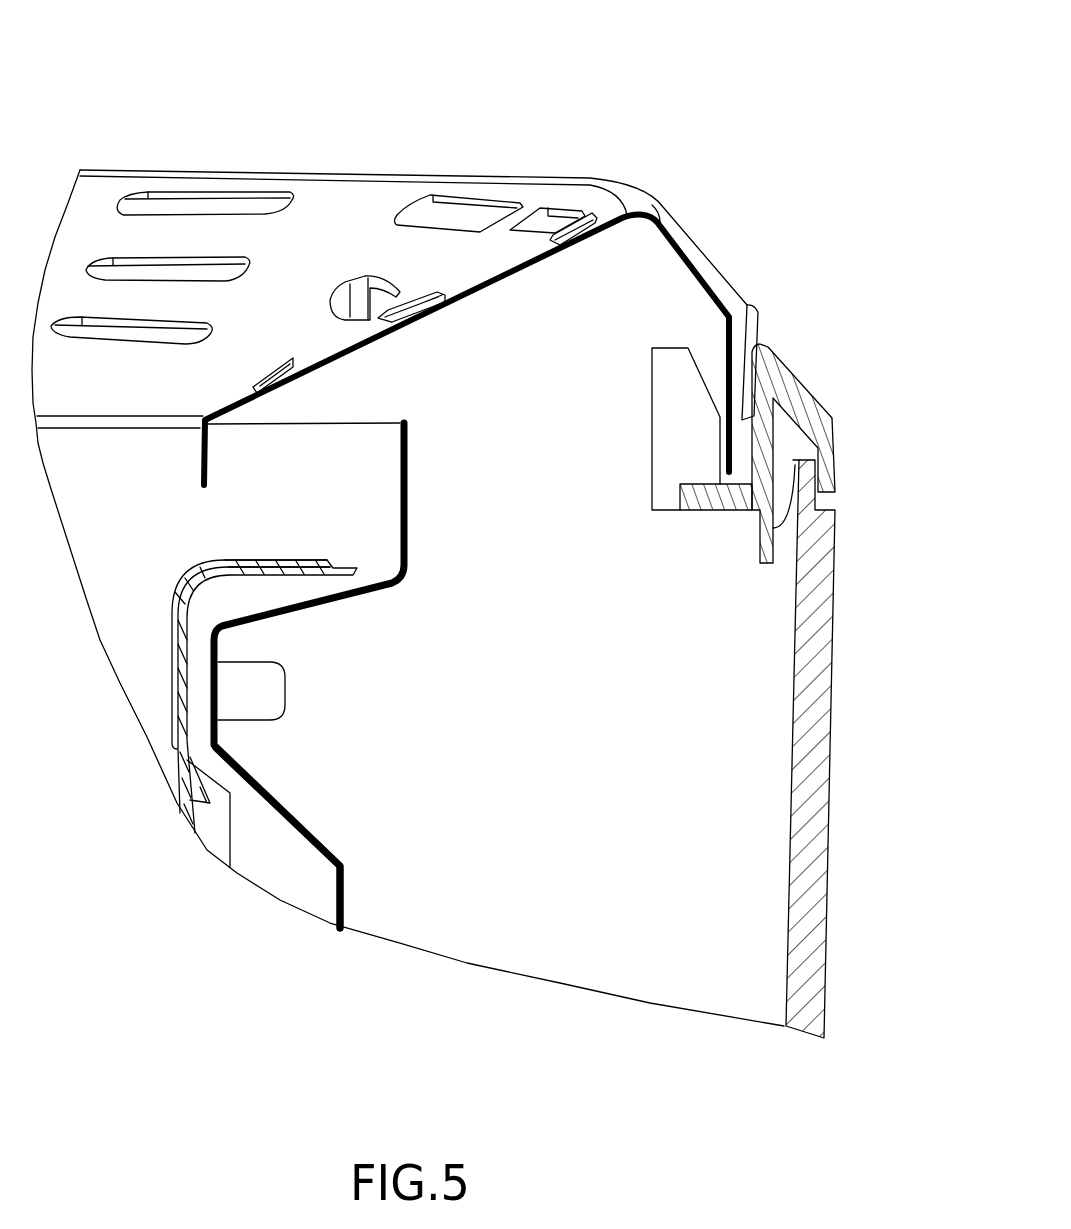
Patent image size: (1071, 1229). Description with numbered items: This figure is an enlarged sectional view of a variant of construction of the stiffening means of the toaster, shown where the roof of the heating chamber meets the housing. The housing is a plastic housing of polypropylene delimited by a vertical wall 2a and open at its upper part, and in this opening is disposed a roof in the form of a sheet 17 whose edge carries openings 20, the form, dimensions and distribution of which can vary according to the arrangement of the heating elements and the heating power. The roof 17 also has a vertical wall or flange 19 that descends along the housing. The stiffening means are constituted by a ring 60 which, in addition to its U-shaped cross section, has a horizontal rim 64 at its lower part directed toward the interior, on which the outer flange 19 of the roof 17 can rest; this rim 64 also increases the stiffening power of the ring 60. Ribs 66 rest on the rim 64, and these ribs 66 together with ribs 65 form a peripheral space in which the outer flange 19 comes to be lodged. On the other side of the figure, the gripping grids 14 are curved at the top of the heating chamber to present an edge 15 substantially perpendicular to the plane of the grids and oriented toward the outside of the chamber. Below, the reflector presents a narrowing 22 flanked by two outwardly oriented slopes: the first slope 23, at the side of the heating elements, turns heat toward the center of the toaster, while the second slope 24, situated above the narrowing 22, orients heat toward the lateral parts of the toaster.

The vertical wall 2a is at (820, 866).
The gripping grids 14 is at (168, 673).
The edge 15 is at (280, 560).
The roof 17 is at (703, 195).
The vertical wall or flange 19 is at (717, 330).
The openings 20 is at (240, 207).
The narrowing 22 is at (218, 688).
The first slope 23 is at (320, 843).
The second slope 24 is at (367, 597).
The ring 60 is at (830, 371).
The horizontal rim 64 is at (707, 508).
The ribs 65 is at (750, 305).
The ribs 66 is at (673, 448).